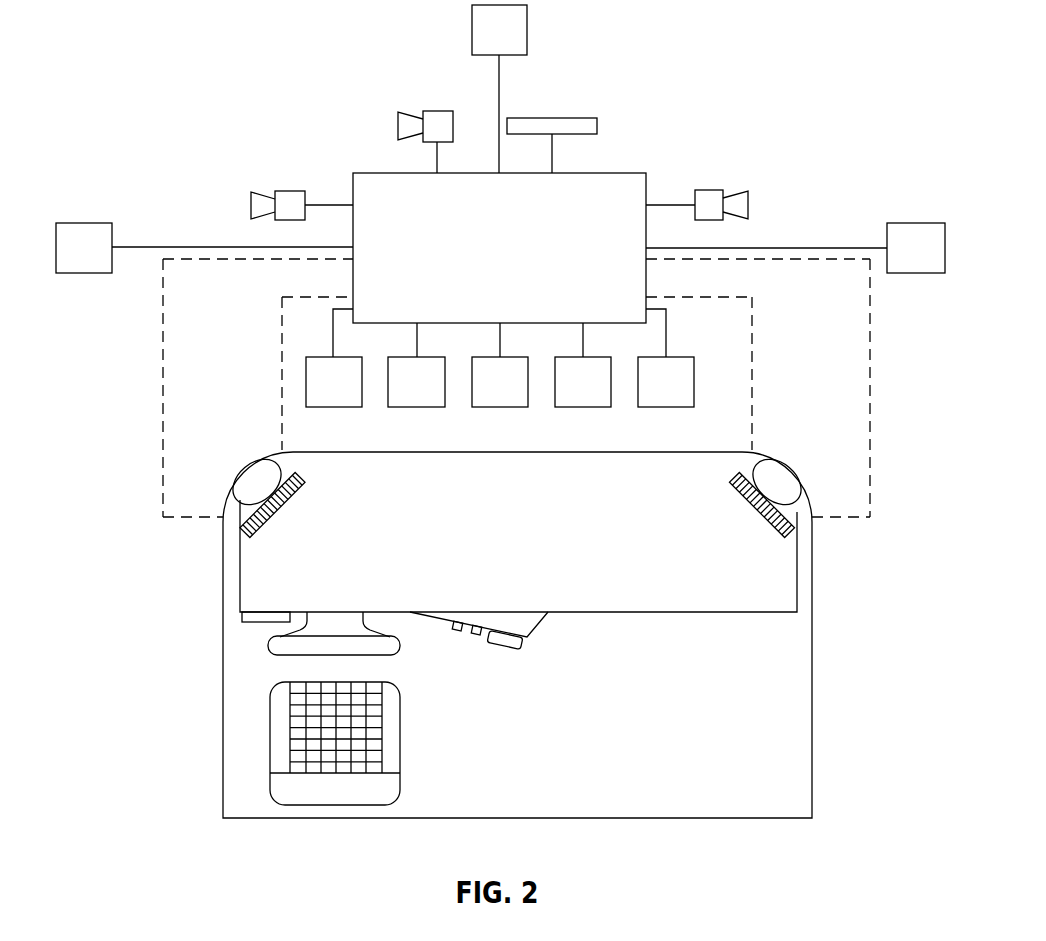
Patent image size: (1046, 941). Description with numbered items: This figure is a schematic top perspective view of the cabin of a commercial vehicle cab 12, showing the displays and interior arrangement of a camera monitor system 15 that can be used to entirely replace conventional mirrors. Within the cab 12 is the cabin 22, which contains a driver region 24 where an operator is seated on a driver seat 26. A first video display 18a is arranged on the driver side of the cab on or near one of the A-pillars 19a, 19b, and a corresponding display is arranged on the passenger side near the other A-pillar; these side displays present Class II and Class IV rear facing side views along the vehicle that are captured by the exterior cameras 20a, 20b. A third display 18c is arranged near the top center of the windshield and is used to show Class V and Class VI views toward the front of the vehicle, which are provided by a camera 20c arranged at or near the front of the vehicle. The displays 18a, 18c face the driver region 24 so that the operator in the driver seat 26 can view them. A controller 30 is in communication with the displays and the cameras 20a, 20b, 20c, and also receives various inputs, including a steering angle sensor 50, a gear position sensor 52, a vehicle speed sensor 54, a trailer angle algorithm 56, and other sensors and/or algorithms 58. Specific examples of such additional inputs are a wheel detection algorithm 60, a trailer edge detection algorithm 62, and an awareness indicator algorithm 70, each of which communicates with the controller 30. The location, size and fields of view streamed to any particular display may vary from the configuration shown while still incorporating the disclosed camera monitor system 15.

The vehicle cab 12 is at (515, 610).
The camera monitor system 15 is at (609, 110).
The first video display 18a is at (268, 472).
The third display 18c is at (552, 117).
The A-pillar 19a is at (233, 490).
The A-pillar 19b is at (803, 490).
The exterior camera 20a is at (290, 191).
The exterior camera 20b is at (710, 190).
The camera 20c is at (437, 110).
The cabin 22 is at (699, 751).
The driver region 24 is at (465, 632).
The driver seat 26 is at (385, 741).
The controller 30 is at (618, 172).
The steering angle sensor 50 is at (320, 395).
The gear position sensor 52 is at (402, 395).
The vehicle speed sensor 54 is at (486, 395).
The trailer angle algorithm 56 is at (569, 395).
The other sensor and/or algorithms 58 is at (652, 395).
The wheel detection algorithm 60 is at (70, 261).
The trailer edge detection algorithm 62 is at (902, 261).
The awareness indicator algorithm 70 is at (486, 42).